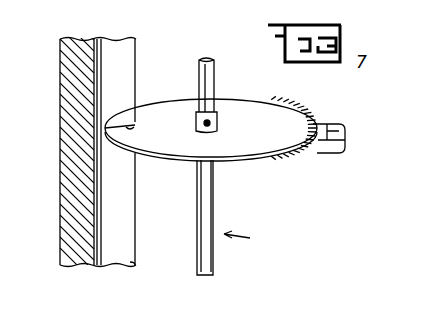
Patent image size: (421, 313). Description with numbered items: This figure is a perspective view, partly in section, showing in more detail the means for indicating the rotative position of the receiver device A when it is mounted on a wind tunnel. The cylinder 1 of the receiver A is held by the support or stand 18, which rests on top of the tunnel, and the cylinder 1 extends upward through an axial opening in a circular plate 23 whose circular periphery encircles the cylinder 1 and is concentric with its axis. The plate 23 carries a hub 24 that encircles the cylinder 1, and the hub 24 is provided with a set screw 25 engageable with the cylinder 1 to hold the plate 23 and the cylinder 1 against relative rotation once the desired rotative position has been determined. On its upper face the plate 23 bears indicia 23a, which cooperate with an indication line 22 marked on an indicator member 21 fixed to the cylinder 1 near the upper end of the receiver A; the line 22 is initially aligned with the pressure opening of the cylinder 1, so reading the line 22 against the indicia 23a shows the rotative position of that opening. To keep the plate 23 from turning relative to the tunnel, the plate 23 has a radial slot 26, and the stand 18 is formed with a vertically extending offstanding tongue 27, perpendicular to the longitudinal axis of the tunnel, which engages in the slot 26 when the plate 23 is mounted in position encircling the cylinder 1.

The cylinder 1 is at (196, 236).
The support or stand 18 is at (60, 212).
The indicator member 21 is at (342, 128).
The indication line or marking 22 is at (318, 153).
The circular plate 23 is at (234, 153).
The indicia 23a is at (284, 112).
The hub 24 is at (218, 124).
The set screw 25 is at (204, 126).
The radial slot 26 is at (132, 128).
The offstanding tongue 27 is at (135, 265).
The receiver device A is at (244, 241).